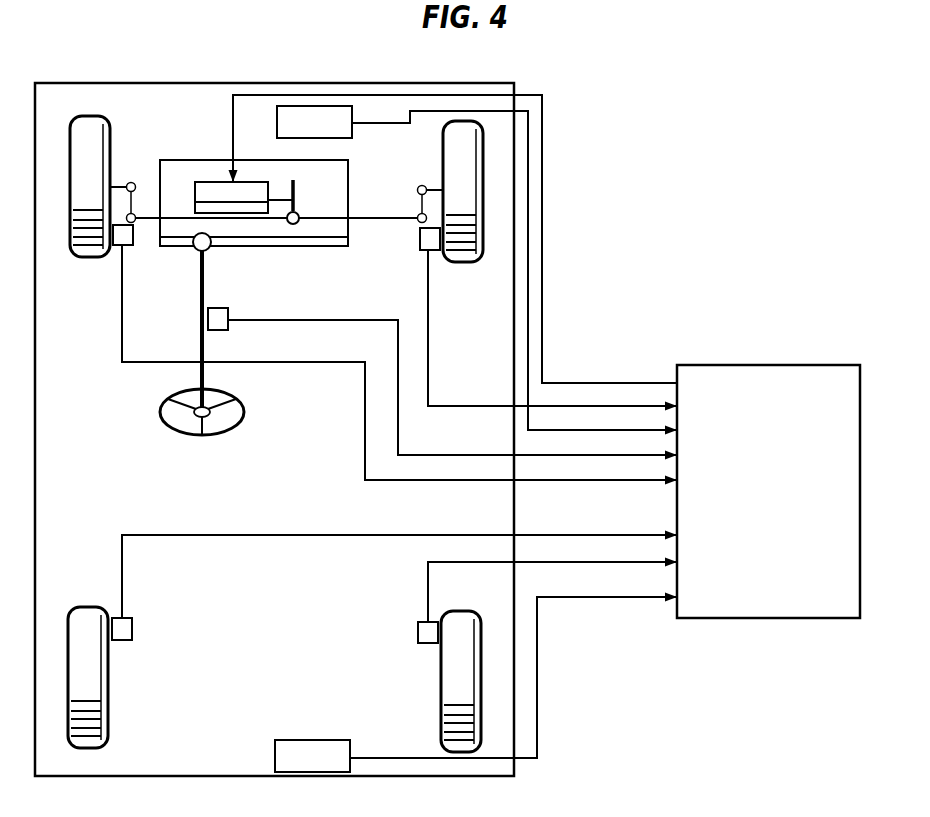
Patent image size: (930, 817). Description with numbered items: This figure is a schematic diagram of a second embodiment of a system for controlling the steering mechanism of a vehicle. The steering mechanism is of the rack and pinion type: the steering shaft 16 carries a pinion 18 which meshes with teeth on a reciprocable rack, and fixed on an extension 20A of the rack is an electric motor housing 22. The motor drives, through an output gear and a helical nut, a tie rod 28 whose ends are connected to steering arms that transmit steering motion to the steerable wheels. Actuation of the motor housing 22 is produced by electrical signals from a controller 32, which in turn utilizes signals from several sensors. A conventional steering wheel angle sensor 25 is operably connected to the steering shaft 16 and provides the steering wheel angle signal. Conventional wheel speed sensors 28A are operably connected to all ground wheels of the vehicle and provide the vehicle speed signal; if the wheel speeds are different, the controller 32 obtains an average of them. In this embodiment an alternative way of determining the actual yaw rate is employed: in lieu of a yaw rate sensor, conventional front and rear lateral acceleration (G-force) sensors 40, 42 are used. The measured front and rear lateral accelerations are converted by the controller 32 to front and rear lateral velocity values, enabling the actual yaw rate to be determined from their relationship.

The steering shaft 16 is at (198, 300).
The pinion 18 is at (210, 249).
The extension of the rack 20A is at (161, 158).
The electric motor housing 22 is at (258, 180).
The steering wheel angle sensor 25 is at (228, 327).
The tie rod 28 is at (363, 213).
The wheel speed sensors 28A is at (135, 235).
The controller 32 is at (770, 365).
The front lateral acceleration sensor 40 is at (352, 138).
The rear lateral acceleration sensor 42 is at (298, 740).